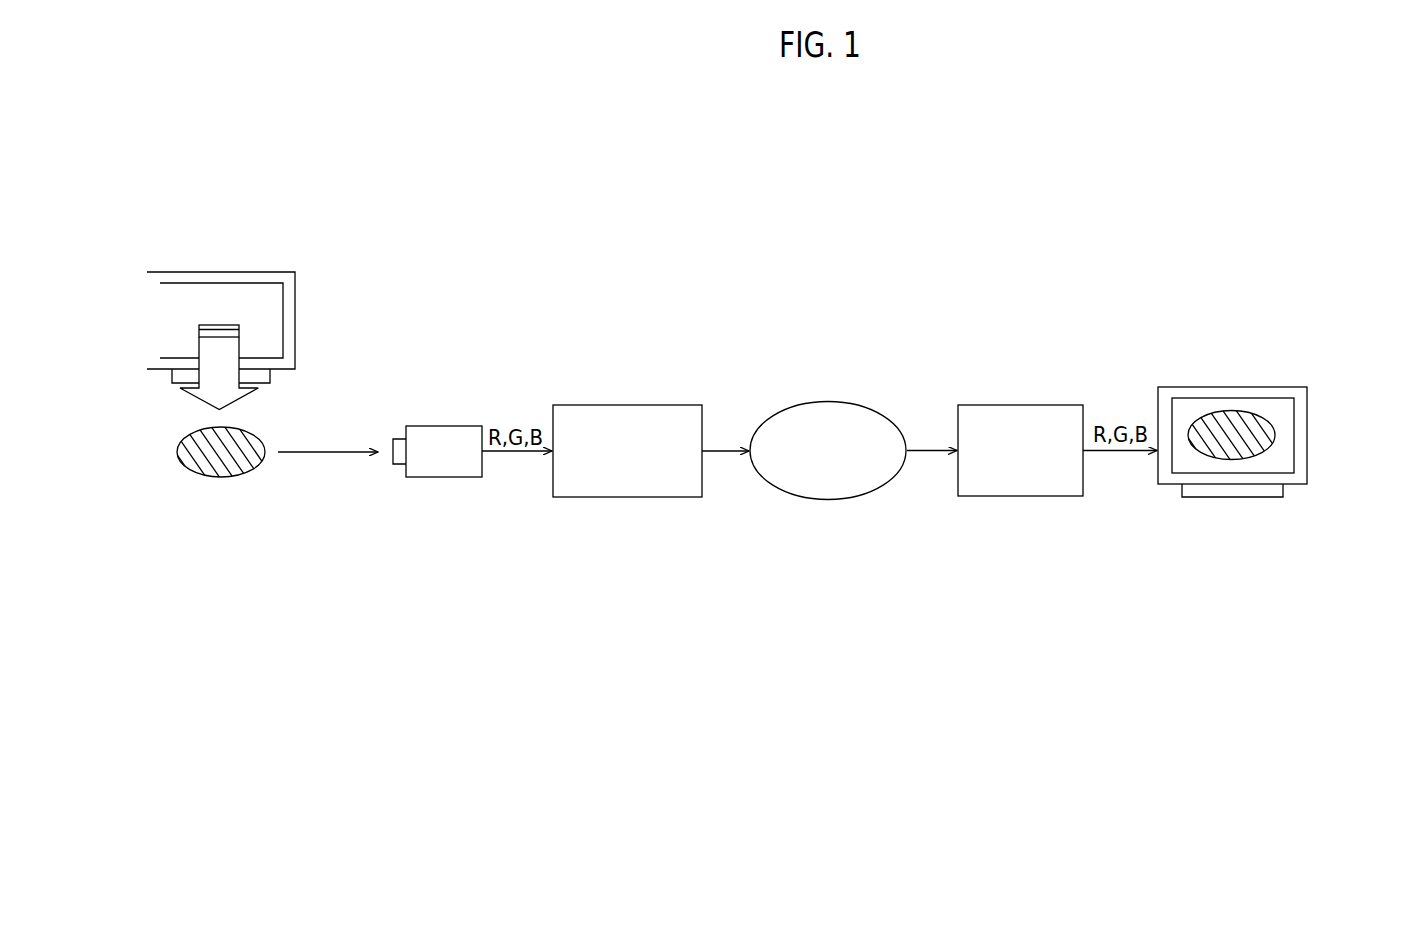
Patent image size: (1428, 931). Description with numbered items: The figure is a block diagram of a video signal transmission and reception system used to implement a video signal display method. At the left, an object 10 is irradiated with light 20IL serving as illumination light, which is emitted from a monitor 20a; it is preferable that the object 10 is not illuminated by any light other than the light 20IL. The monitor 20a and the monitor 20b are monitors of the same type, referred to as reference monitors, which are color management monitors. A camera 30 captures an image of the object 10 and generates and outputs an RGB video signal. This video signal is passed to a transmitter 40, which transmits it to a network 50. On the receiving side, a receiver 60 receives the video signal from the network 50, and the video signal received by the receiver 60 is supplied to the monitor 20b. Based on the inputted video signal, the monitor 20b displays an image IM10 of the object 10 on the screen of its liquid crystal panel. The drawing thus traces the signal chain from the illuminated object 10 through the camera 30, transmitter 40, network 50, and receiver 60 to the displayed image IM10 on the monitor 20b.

The object 10 is at (222, 478).
The monitor 20a is at (255, 271).
The light 20IL is at (237, 345).
The camera 30 is at (450, 426).
The transmitter 40 is at (638, 405).
The network 50 is at (847, 402).
The receiver 60 is at (1024, 405).
The monitor 20b is at (1275, 387).
The image IM10 is at (1275, 432).